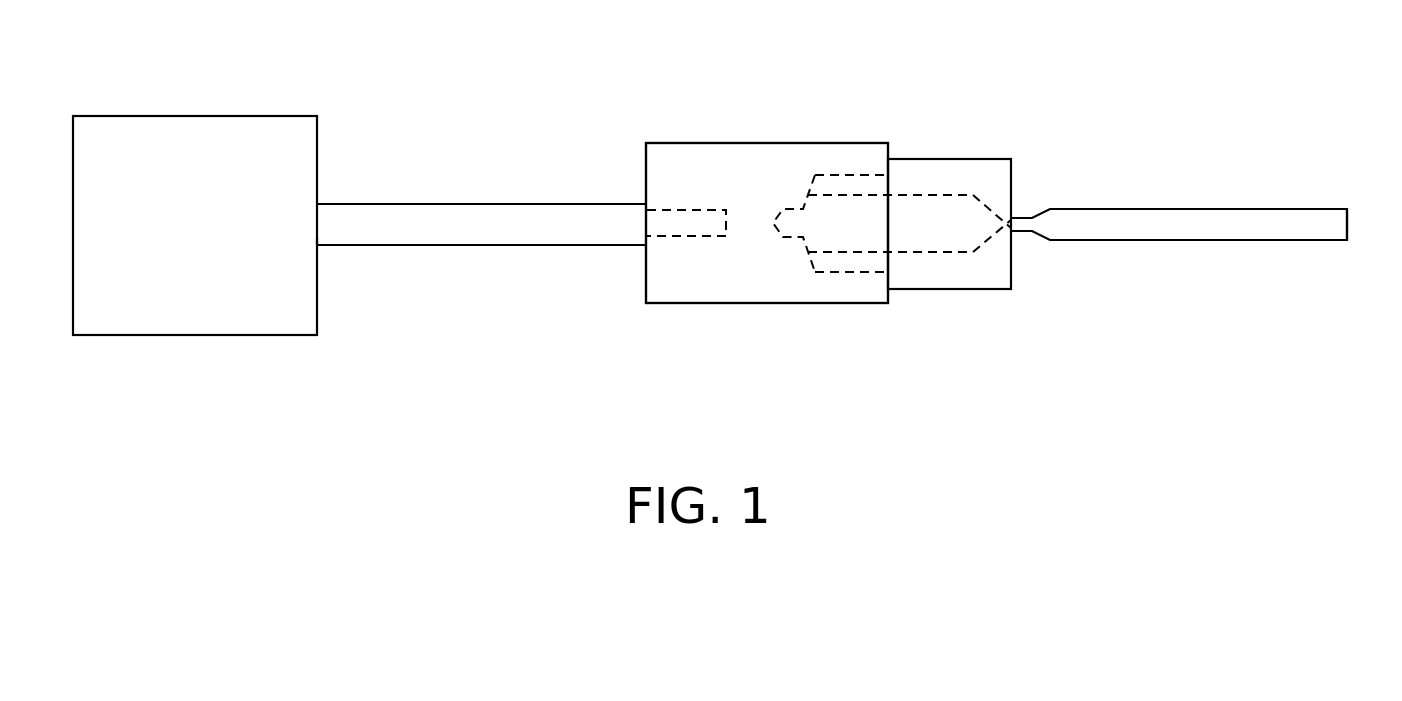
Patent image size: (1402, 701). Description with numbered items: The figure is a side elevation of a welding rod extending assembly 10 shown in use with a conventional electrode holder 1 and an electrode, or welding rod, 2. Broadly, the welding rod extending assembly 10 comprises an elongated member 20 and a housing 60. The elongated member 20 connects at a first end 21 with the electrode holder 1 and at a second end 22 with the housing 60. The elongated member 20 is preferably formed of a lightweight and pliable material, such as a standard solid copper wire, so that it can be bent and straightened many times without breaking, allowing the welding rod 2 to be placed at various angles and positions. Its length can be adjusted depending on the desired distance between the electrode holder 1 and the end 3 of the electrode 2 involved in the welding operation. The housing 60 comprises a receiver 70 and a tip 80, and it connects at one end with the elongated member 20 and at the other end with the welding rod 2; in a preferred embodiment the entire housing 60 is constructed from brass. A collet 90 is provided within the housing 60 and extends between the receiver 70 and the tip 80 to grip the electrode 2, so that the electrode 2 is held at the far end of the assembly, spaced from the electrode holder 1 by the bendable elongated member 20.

The electrode holder 1 is at (213, 126).
The electrode 2 is at (1192, 209).
The end of the electrode 3 is at (1348, 225).
The welding rod extending assembly 10 is at (523, 85).
The elongated member 20 is at (470, 213).
The first end 21 is at (318, 246).
The second end 22 is at (642, 246).
The housing 60 is at (848, 143).
The receiver 70 is at (752, 293).
The tip 80 is at (962, 290).
The collet 90 is at (870, 253).